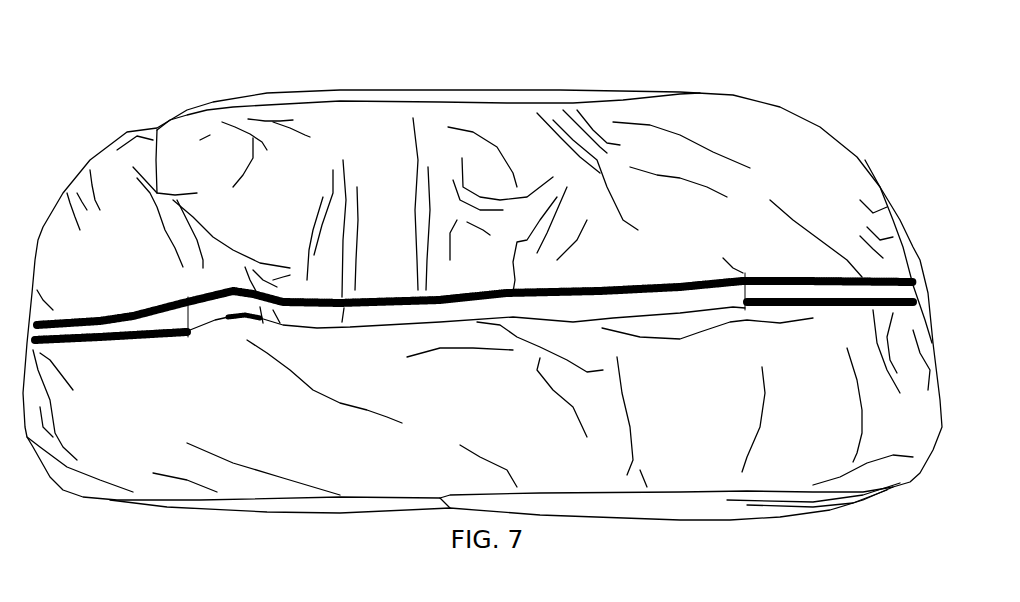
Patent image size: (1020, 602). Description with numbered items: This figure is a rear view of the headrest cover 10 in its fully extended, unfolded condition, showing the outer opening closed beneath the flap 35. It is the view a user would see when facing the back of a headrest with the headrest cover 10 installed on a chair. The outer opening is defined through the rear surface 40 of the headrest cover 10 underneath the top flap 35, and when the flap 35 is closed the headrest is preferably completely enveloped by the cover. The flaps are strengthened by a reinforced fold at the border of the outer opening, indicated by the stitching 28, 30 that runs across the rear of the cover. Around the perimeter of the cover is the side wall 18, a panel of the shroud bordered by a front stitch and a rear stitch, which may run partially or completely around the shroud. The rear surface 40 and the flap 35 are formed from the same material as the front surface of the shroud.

The headrest cover 10 is at (380, 60).
The side wall 18 is at (705, 515).
The stitching 28 is at (133, 312).
The stitching 30 is at (123, 345).
The top flap 35 is at (370, 322).
The rear surface 40 is at (674, 261).